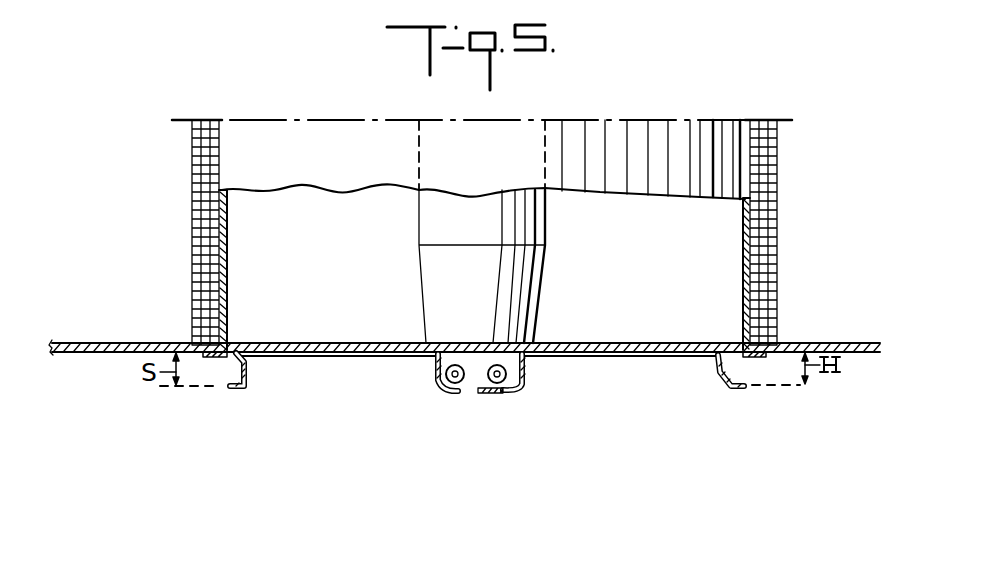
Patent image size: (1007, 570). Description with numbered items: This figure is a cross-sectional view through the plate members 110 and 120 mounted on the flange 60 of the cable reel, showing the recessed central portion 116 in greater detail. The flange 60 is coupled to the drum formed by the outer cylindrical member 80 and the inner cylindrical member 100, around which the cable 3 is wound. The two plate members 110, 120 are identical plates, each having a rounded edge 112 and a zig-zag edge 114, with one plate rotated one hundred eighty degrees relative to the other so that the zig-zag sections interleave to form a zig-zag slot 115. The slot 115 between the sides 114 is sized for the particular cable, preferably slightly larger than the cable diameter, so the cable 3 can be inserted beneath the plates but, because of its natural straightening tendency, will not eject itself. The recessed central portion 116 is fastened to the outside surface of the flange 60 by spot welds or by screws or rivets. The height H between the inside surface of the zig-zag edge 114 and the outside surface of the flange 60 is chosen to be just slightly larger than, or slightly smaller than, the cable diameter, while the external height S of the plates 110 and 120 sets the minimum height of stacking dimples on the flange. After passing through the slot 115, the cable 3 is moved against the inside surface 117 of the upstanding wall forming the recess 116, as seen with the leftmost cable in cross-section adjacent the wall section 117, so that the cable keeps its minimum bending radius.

The cable 3 is at (752, 158).
The flange 60 is at (107, 355).
The outer cylindrical member 80 is at (222, 233).
The inner cylindrical member 100 is at (425, 270).
The plate member 110 is at (250, 385).
The rounded edge 112 is at (230, 390).
The zig-zag edge 114 is at (450, 391).
The zig-zag slot 115 is at (468, 392).
The recessed central portion 116 is at (352, 357).
The inside surface of upstanding wall 117 is at (462, 345).
The plate member 120 is at (540, 378).